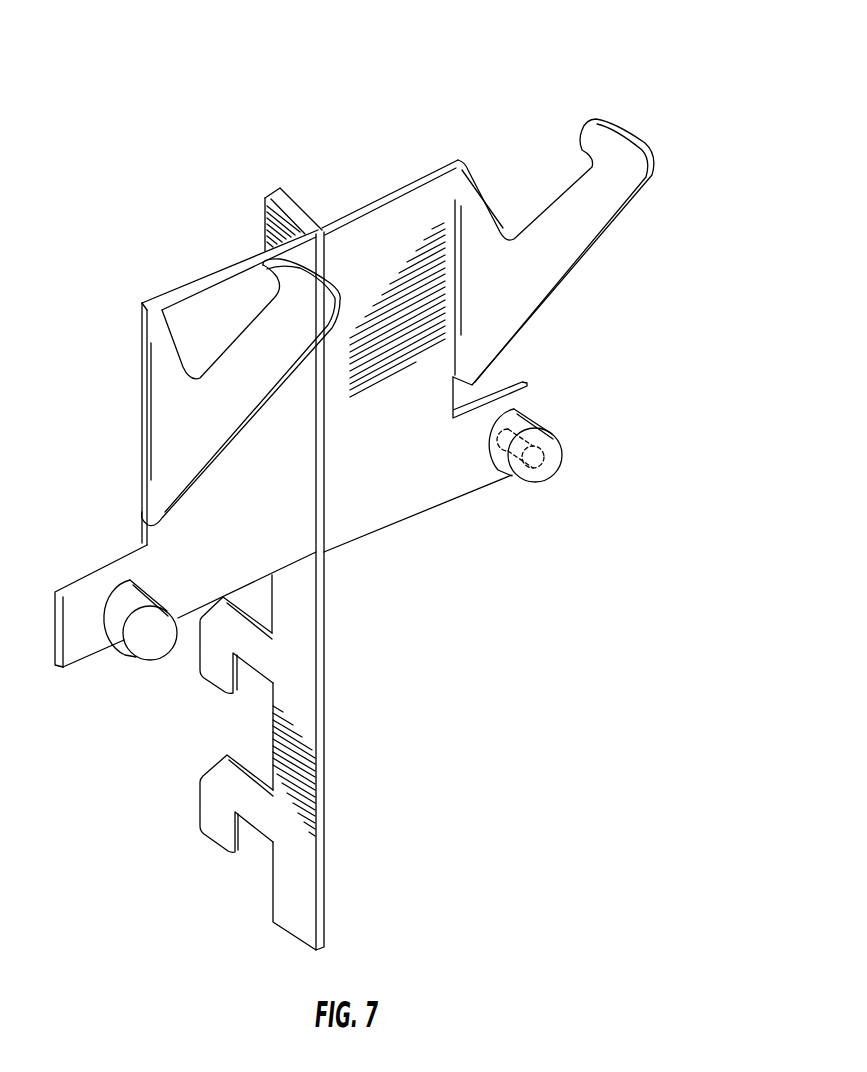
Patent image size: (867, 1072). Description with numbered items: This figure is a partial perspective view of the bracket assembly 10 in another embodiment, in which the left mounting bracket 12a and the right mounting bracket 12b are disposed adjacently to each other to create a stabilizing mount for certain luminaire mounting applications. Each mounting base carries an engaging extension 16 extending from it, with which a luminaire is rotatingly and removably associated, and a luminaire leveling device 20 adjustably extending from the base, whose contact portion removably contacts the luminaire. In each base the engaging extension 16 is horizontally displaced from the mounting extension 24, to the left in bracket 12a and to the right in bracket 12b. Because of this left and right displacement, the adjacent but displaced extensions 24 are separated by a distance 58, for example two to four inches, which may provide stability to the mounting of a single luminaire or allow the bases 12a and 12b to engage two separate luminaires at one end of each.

The bracket assembly 10 is at (503, 100).
The left mounting bracket 12a is at (233, 540).
The right mounting bracket 12b is at (412, 480).
The engaging extension 16 is at (246, 404).
The luminaire leveling device 20 is at (116, 628).
The mounting extension 24 is at (215, 823).
The distance 58 is at (238, 258).